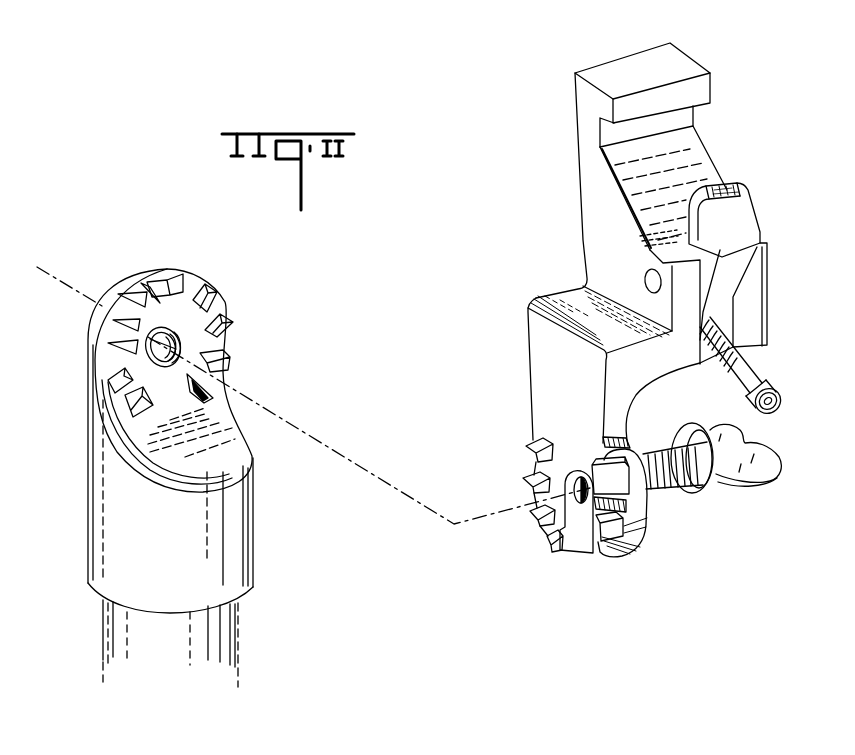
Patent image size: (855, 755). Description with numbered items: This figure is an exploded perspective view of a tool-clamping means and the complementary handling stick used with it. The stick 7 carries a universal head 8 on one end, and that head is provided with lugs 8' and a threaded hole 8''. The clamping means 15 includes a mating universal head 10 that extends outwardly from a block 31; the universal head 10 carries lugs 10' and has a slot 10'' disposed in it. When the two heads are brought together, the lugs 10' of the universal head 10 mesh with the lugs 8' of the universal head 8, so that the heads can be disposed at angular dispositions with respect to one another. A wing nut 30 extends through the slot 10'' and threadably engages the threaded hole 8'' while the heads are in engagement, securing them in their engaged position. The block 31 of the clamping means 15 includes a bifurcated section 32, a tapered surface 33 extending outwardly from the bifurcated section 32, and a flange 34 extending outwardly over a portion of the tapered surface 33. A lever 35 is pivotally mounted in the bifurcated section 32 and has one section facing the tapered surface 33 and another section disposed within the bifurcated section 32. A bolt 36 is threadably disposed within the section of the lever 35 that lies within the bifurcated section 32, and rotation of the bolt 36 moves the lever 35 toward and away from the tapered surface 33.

The stick 7 is at (208, 640).
The universal head 8 is at (144, 441).
The lugs 8' is at (185, 340).
The threaded hole 8'' is at (215, 346).
The mating universal head 10 is at (649, 514).
The lugs 10' is at (596, 544).
The slot 10'' is at (540, 514).
The clamping means 15 is at (583, 286).
The wing nut 30 is at (700, 484).
The block 31 is at (581, 208).
The bifurcated section 32 is at (760, 283).
The tapered surface 33 is at (687, 167).
The flange 34 is at (683, 59).
The lever 35 is at (738, 213).
The bolt 36 is at (766, 389).